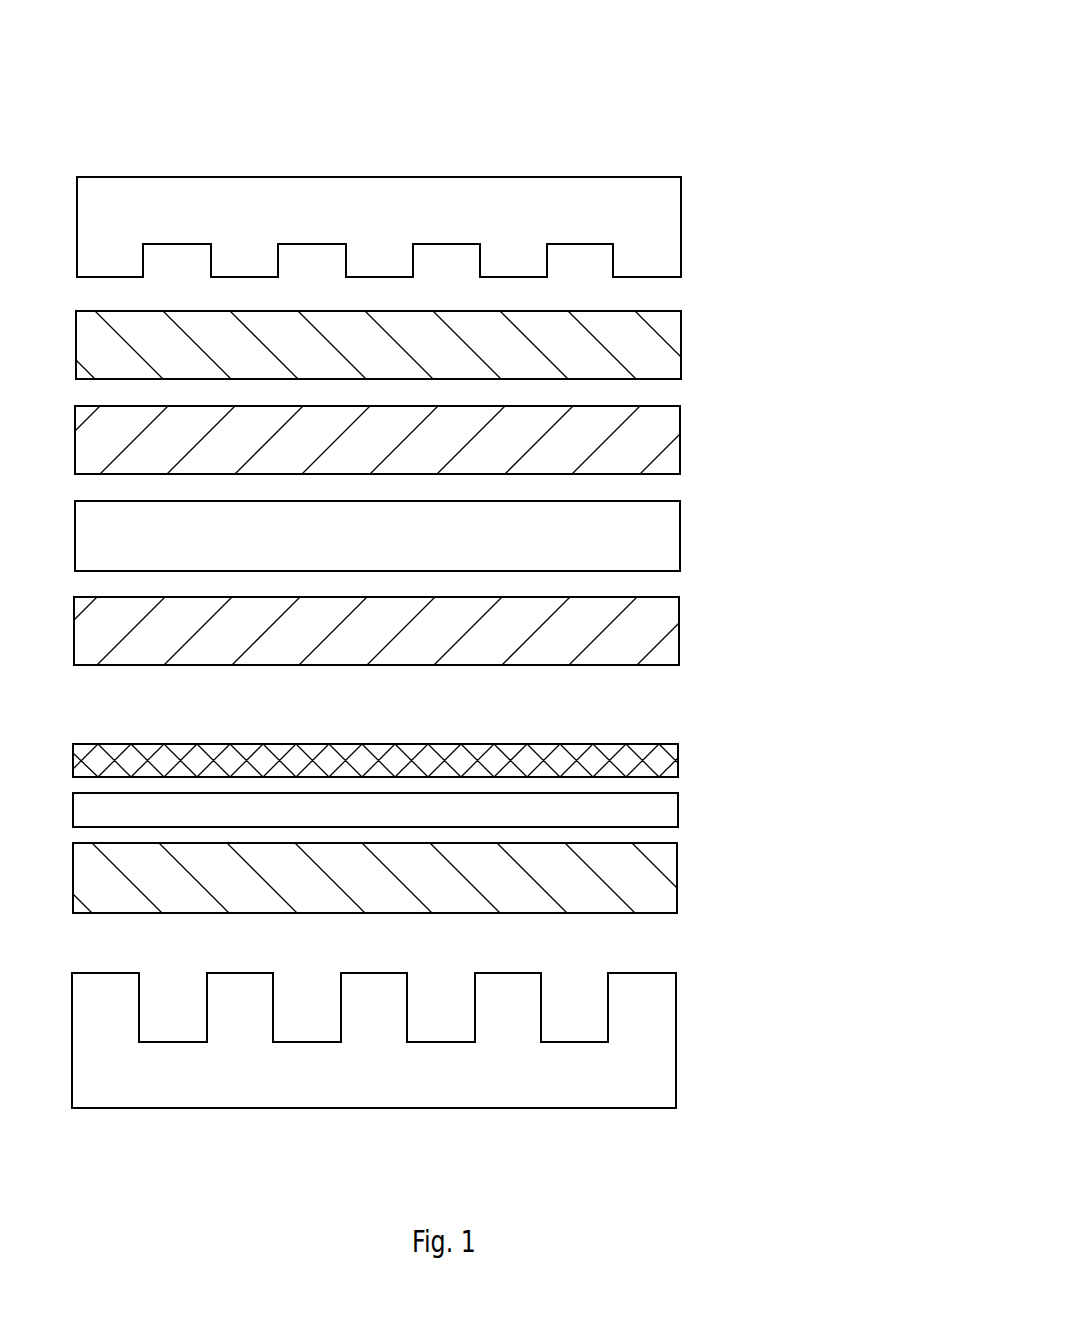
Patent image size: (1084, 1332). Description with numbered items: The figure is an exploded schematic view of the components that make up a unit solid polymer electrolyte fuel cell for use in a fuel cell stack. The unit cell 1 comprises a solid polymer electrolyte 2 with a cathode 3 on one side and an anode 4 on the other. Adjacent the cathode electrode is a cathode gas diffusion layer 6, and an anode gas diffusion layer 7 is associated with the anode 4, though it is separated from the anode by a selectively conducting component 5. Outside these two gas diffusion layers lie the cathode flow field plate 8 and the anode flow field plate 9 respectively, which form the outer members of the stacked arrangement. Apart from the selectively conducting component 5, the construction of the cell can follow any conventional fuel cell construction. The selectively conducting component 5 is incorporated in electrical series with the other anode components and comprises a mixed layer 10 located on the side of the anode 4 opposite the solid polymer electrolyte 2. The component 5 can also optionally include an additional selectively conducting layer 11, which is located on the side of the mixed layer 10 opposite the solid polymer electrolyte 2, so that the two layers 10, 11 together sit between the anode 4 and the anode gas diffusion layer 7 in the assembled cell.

The unit cell 1 is at (725, 138).
The solid polymer electrolyte 2 is at (657, 537).
The cathode 3 is at (657, 442).
The anode 4 is at (657, 633).
The selectively conducting component 5 is at (471, 778).
The cathode gas diffusion layer 6 is at (657, 347).
The anode gas diffusion layer 7 is at (652, 880).
The cathode flow field plate 8 is at (657, 229).
The anode flow field plate 9 is at (652, 1043).
The mixed layer 10 is at (670, 753).
The selectively conducting layer 11 is at (653, 810).